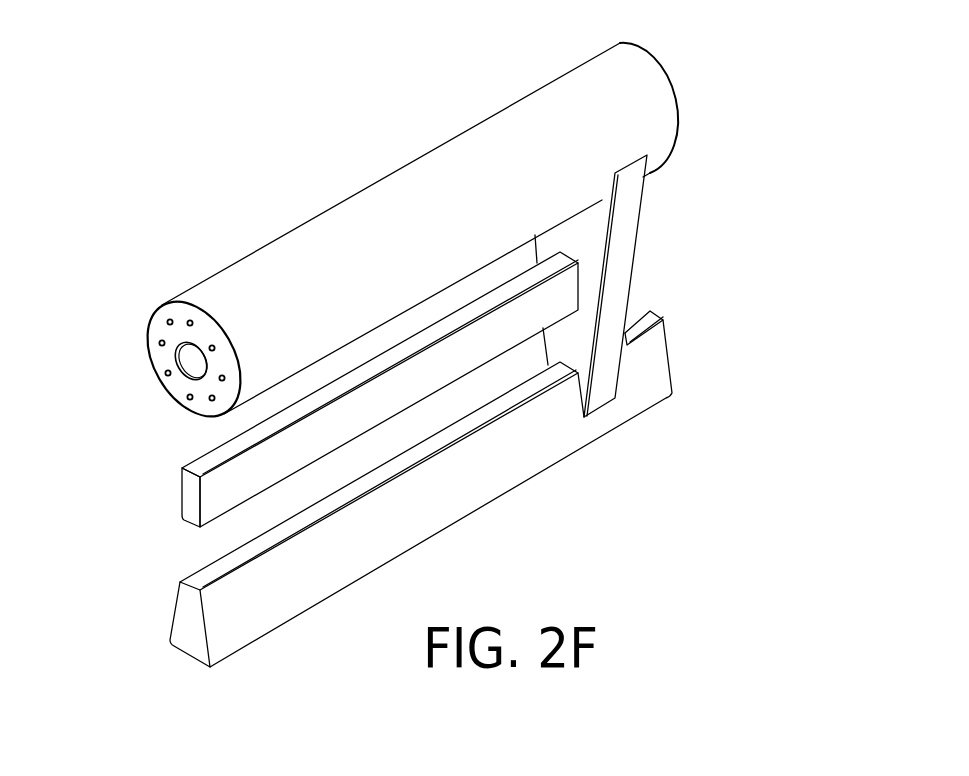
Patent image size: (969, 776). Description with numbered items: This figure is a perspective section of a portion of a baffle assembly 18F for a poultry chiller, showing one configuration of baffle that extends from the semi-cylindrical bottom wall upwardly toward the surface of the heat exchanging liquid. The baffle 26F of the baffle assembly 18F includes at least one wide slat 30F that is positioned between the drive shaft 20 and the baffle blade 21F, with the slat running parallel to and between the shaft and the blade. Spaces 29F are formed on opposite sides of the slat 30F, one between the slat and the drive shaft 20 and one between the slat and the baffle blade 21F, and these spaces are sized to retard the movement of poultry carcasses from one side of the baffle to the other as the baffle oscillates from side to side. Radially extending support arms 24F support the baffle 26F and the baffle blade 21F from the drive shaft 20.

The drive shaft 20 is at (427, 148).
The support arm 24F is at (628, 240).
The baffle 26F is at (168, 488).
The wide slat 30F is at (215, 494).
The space 29F is at (203, 437).
The baffle assembly 18F is at (605, 469).
The baffle blade 21F is at (227, 622).